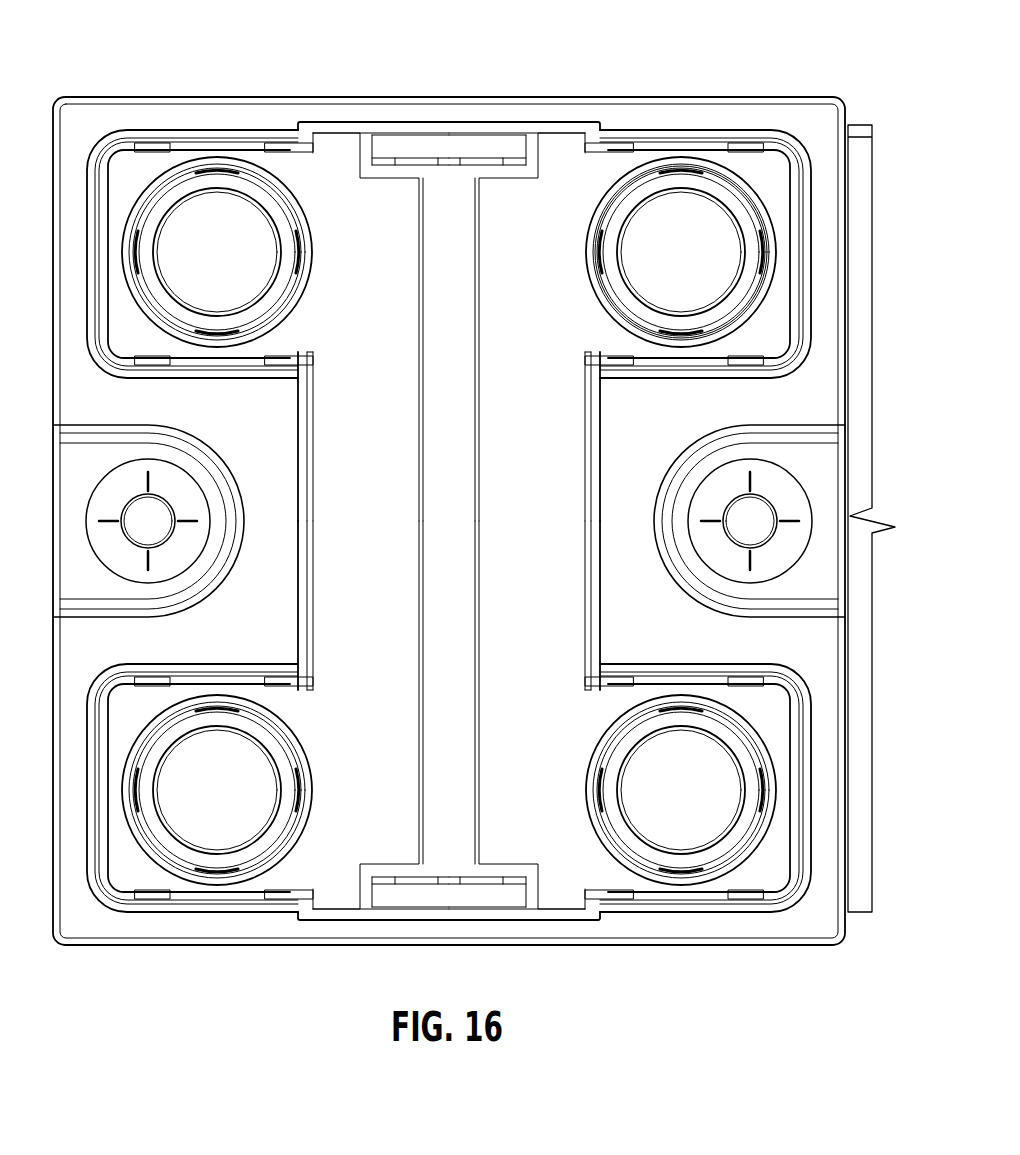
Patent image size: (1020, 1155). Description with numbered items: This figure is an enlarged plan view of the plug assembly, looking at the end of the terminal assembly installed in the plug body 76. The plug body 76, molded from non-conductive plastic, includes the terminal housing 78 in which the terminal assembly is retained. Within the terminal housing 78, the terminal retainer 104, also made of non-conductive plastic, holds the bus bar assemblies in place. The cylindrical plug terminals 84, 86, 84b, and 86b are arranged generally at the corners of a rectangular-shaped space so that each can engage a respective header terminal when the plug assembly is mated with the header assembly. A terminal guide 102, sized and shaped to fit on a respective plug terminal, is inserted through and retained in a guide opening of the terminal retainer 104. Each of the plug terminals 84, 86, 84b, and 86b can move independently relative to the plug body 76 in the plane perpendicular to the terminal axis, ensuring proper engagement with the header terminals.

The plug body 76 is at (860, 130).
The terminal housing 78 is at (710, 96).
The plug terminal 84 is at (676, 314).
The plug terminal 84b is at (212, 314).
The plug terminal 86 is at (676, 852).
The plug terminal 86b is at (212, 852).
The terminal guide 102 is at (610, 292).
The terminal retainer 104 is at (380, 563).